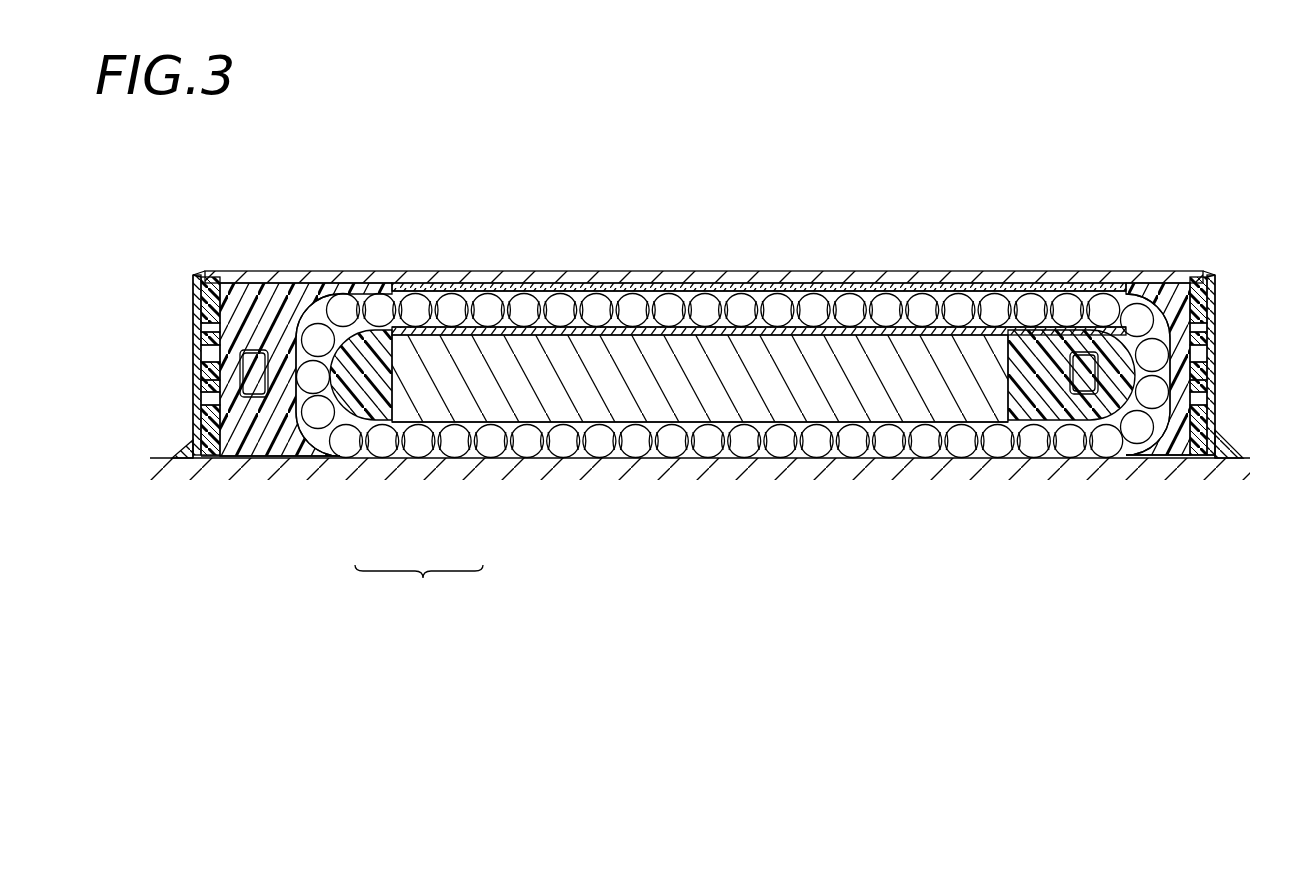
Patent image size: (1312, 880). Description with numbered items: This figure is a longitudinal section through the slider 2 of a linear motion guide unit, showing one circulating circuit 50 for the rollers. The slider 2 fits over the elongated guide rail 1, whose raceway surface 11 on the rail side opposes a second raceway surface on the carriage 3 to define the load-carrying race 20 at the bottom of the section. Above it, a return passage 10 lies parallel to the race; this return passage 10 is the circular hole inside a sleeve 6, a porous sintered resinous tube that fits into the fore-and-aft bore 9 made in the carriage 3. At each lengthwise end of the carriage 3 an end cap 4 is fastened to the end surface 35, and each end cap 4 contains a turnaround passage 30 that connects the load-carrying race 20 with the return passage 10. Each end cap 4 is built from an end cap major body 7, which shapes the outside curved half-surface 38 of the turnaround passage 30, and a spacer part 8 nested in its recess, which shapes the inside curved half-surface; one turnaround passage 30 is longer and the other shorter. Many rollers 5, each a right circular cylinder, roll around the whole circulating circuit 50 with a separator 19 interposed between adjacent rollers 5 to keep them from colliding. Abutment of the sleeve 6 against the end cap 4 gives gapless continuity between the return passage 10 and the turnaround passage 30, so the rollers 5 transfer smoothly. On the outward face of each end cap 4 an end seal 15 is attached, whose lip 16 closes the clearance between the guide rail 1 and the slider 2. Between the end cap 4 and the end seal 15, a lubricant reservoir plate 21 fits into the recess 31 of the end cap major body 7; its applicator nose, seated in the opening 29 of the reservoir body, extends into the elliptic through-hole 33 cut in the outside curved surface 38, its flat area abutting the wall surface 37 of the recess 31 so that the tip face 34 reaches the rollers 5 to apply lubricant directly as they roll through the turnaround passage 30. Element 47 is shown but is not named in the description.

The guide rail 1 is at (719, 472).
The slider 2 is at (917, 258).
The carriage 3 is at (690, 276).
The end cap 4 is at (287, 186).
The roller 5 is at (256, 365).
The sleeve 6 is at (532, 330).
The end cap major body 7 is at (290, 292).
The spacer part 8 is at (346, 290).
The fore-and-aft bore 9 is at (575, 291).
The return passage 10 is at (827, 290).
The raceway surface 11 is at (667, 447).
The end seal 15 is at (197, 333).
The lip 16 is at (188, 457).
The separator 19 is at (785, 282).
The load-carrying race 20 is at (433, 455).
The lubricant reservoir plate 21 is at (203, 355).
The opening 29 is at (193, 418).
The turnaround passage 30 is at (1087, 350).
The recess 31 is at (205, 272).
The through-hole 33 is at (203, 378).
The tip face 34 is at (245, 410).
The end surface 35 is at (355, 348).
The wall surface 37 is at (203, 403).
The outside curved half-surface 38 is at (240, 348).
The cover plate 47 is at (197, 273).
The circulating circuit 50 is at (419, 588).